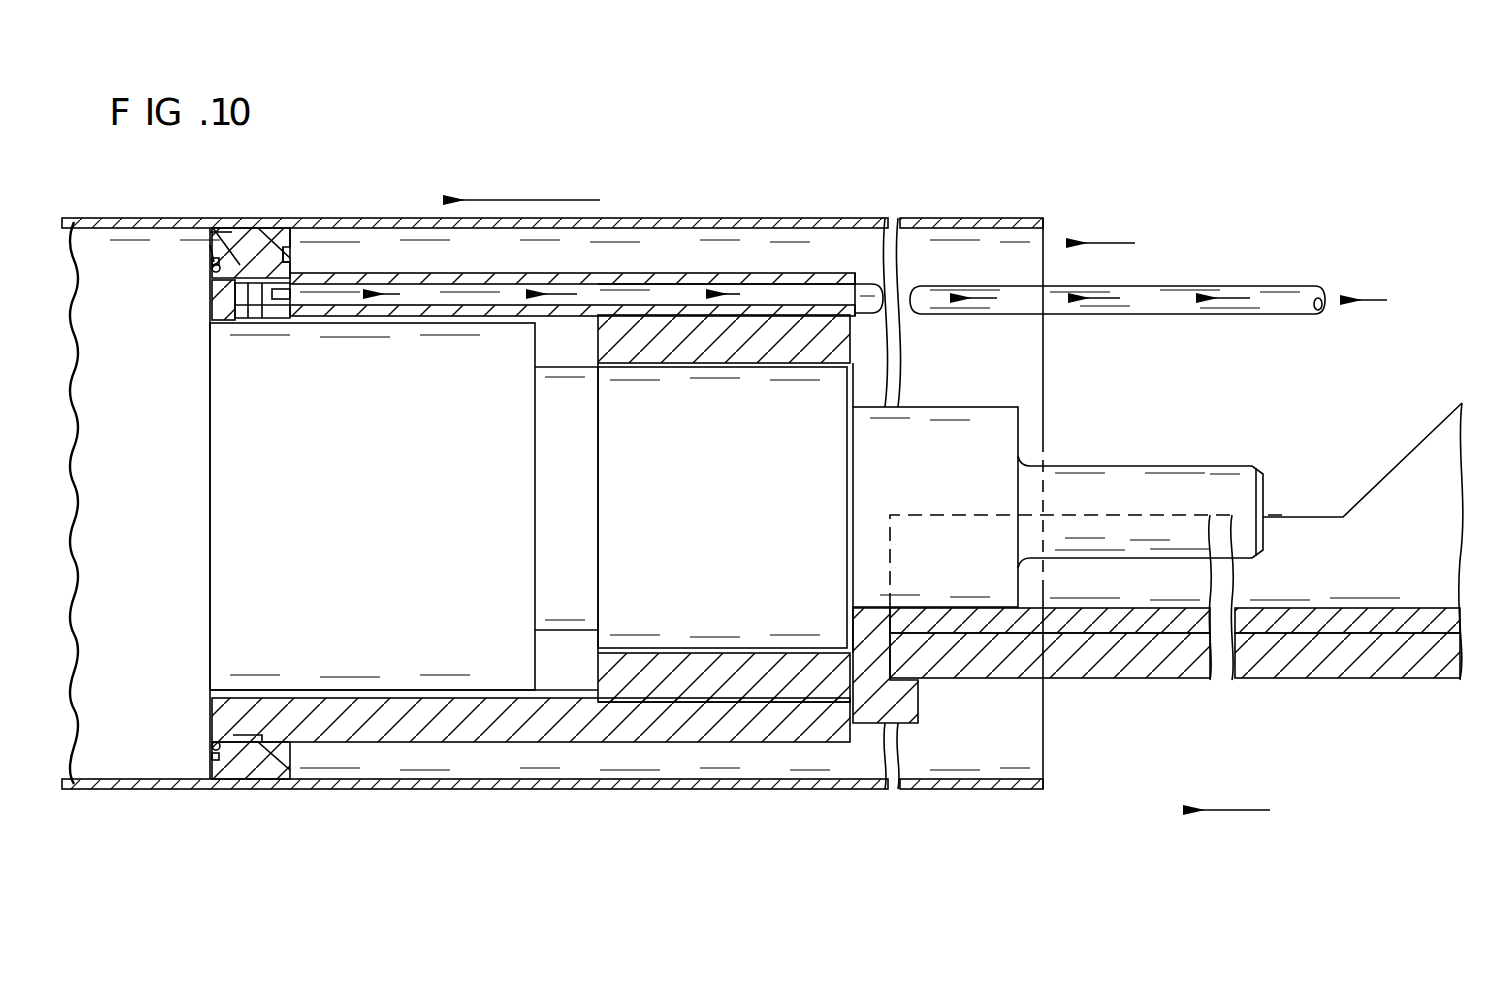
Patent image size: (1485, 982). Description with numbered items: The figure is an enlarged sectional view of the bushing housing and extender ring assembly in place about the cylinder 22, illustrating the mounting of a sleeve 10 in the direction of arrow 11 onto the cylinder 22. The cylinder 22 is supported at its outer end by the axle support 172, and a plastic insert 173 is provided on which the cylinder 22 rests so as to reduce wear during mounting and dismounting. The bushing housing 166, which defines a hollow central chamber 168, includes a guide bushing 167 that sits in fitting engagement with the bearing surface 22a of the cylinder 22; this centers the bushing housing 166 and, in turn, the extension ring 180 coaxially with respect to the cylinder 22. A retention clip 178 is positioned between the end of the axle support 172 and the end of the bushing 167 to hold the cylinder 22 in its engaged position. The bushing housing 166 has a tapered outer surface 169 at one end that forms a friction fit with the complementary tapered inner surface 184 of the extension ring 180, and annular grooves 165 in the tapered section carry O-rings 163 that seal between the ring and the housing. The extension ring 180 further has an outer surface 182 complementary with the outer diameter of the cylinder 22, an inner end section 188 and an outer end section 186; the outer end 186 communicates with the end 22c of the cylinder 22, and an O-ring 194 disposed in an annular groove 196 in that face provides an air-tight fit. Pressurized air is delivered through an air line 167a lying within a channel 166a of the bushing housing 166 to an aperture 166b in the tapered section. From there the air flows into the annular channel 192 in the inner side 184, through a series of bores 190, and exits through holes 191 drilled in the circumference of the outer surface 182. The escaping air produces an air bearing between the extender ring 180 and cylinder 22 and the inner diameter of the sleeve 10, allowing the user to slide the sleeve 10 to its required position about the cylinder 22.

The sleeve 10 is at (690, 217).
The arrow 11 is at (546, 198).
The cylinder 22 is at (680, 503).
The bearing surface 22a is at (722, 507).
The end of cylinder 22c is at (222, 690).
The O-rings 163 is at (222, 300).
The annular grooves 165 is at (283, 298).
The bushing housing 166 is at (757, 272).
The channel 166a is at (618, 280).
The aperture 166b is at (266, 318).
The guide bushing 167 is at (764, 350).
The air line 167a is at (820, 296).
The hollow central chamber 168 is at (722, 706).
The tapered outer surface 169 is at (250, 734).
The axle support 172 is at (1340, 678).
The plastic insert 173 is at (1362, 608).
The retention clip 178 is at (918, 704).
The extension ring 180 is at (283, 228).
The outer surface 182 is at (262, 226).
The tapered inner surface 184 is at (291, 249).
The outer end section 186 is at (208, 248).
The inner end section 188 is at (318, 228).
The bores 190 is at (208, 235).
The holes 191 is at (222, 228).
The annular channel 192 is at (236, 320).
The O-ring 194 is at (212, 268).
The annular groove 196 is at (211, 262).